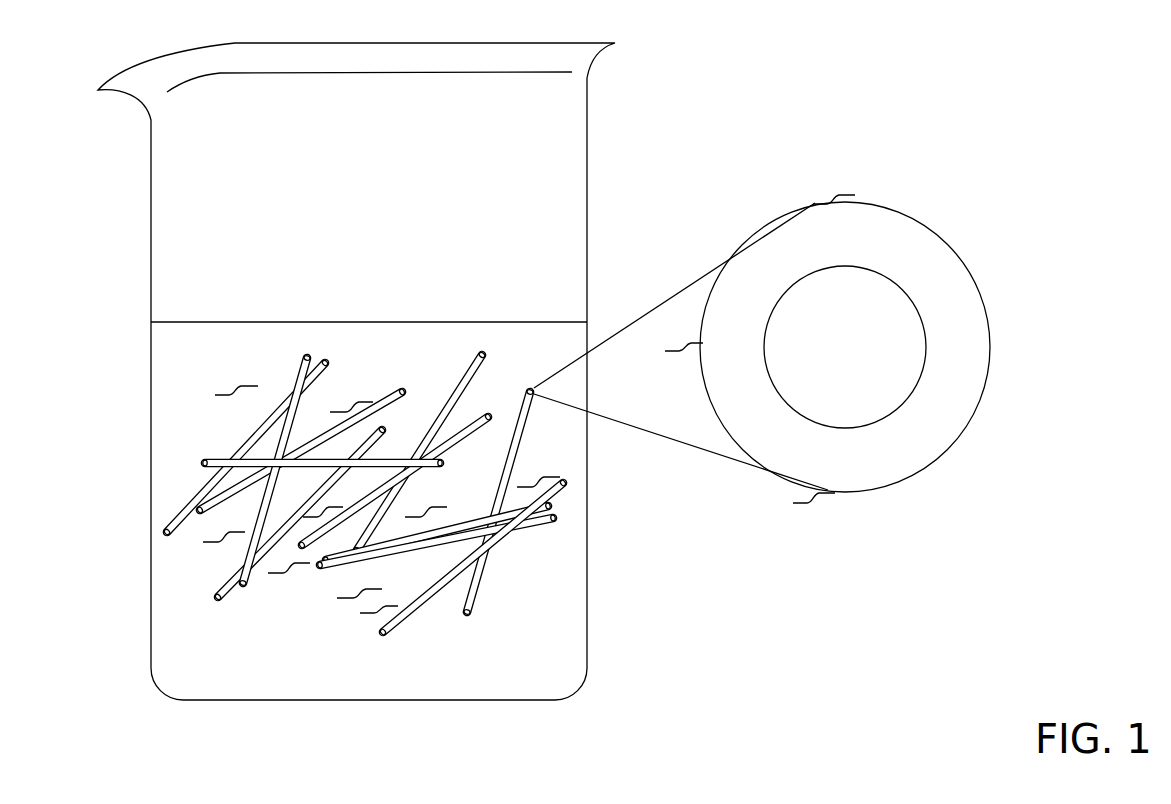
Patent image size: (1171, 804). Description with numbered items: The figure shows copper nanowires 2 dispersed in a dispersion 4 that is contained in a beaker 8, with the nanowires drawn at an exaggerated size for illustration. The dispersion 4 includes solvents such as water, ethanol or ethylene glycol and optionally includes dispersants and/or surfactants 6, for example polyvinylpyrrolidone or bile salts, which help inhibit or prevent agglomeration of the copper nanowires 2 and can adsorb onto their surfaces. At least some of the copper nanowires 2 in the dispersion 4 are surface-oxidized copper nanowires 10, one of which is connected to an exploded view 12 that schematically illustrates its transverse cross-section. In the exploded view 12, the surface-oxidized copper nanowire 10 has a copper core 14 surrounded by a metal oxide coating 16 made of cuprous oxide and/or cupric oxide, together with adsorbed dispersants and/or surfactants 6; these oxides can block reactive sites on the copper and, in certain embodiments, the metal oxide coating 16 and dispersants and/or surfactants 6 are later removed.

The copper nanowires 2 is at (262, 512).
The dispersion 4 is at (370, 309).
The dispersants and/or surfactants 6 is at (343, 598).
The beaker 8 is at (586, 153).
The surface-oxidized copper nanowire 10 is at (503, 447).
The exploded view 12 is at (840, 522).
The copper core 14 is at (842, 366).
The metal oxide coating 16 is at (953, 303).